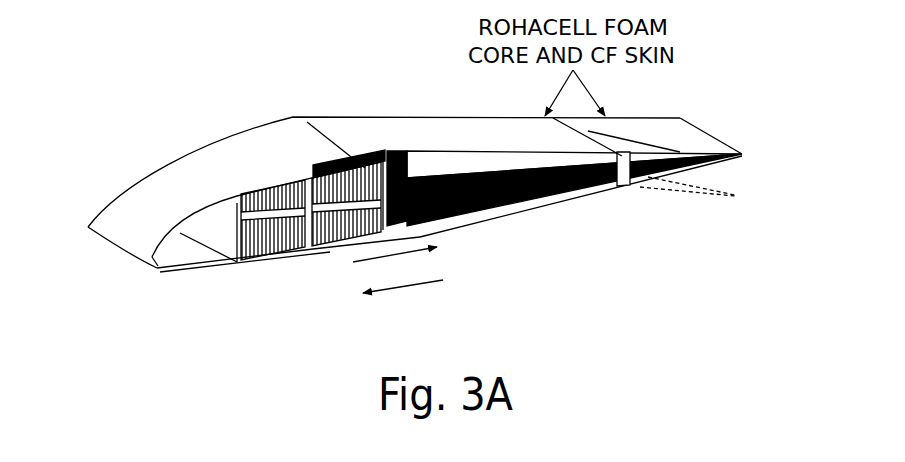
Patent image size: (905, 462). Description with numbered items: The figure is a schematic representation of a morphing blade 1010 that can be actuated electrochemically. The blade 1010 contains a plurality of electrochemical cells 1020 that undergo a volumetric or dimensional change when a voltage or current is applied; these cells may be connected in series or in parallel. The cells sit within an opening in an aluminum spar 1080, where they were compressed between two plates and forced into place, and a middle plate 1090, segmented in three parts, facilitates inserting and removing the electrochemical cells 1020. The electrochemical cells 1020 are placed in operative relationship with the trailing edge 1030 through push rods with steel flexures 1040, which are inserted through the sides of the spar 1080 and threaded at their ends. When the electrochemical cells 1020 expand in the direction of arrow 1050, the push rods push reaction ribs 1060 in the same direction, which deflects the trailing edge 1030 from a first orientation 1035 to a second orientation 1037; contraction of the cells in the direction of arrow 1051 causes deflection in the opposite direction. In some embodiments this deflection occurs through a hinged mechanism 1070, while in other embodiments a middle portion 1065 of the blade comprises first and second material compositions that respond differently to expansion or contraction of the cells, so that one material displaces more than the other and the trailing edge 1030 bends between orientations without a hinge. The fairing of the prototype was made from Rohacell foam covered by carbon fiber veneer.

The blade 1010 is at (160, 107).
The electrochemical cells 1020 is at (267, 182).
The trailing edge 1030 is at (697, 140).
The first orientation 1035 is at (762, 133).
The second orientation 1037 is at (762, 180).
The push rods with steel flexures 1040 is at (358, 166).
The arrow 1050 is at (362, 265).
The arrow 1051 is at (423, 288).
The reaction ribs 1060 is at (503, 211).
The middle portion 1065 is at (552, 214).
The hinged mechanism 1070 is at (636, 194).
The spar 1080 is at (183, 277).
The middle plate 1090 is at (306, 259).